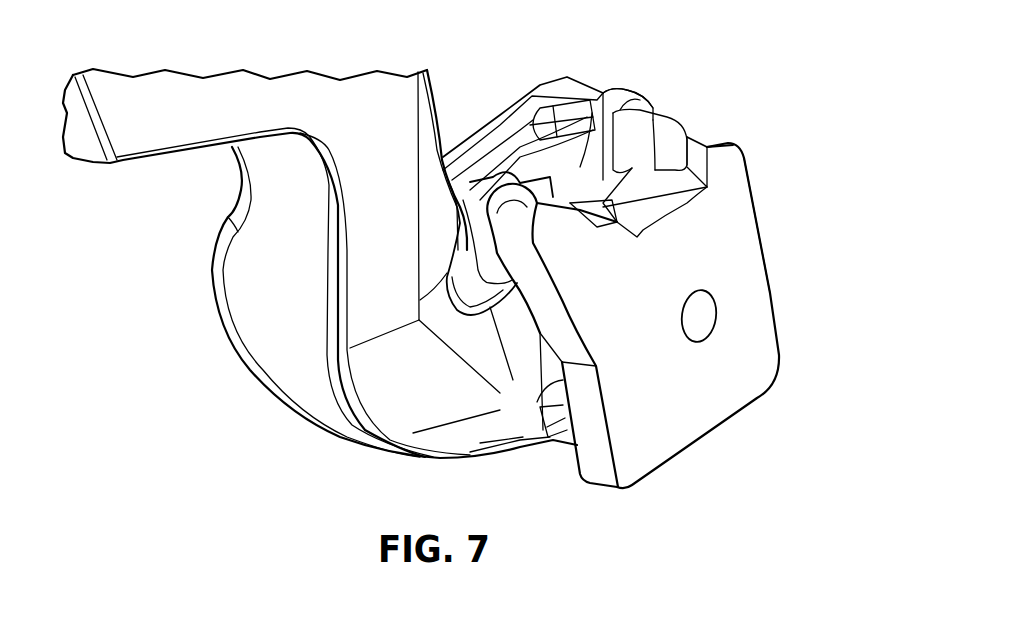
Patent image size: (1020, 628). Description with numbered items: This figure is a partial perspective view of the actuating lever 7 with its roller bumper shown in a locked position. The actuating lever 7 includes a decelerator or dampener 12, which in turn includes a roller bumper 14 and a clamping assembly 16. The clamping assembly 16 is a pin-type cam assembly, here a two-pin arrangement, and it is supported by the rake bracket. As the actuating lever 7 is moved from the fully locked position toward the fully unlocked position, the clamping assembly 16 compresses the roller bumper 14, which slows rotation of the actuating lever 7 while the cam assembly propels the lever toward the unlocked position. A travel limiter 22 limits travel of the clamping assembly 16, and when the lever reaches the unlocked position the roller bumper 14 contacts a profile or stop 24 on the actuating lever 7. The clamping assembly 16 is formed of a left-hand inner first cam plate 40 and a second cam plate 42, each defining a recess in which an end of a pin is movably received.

The actuating lever 7 is at (785, 217).
The dampener 12 is at (667, 104).
The roller bumper 14 is at (505, 173).
The clamping assembly 16 is at (747, 163).
The travel limiter 22 is at (683, 127).
The stop 24 is at (580, 128).
The first cam plate 40 is at (637, 130).
The second cam plate 42 is at (773, 293).